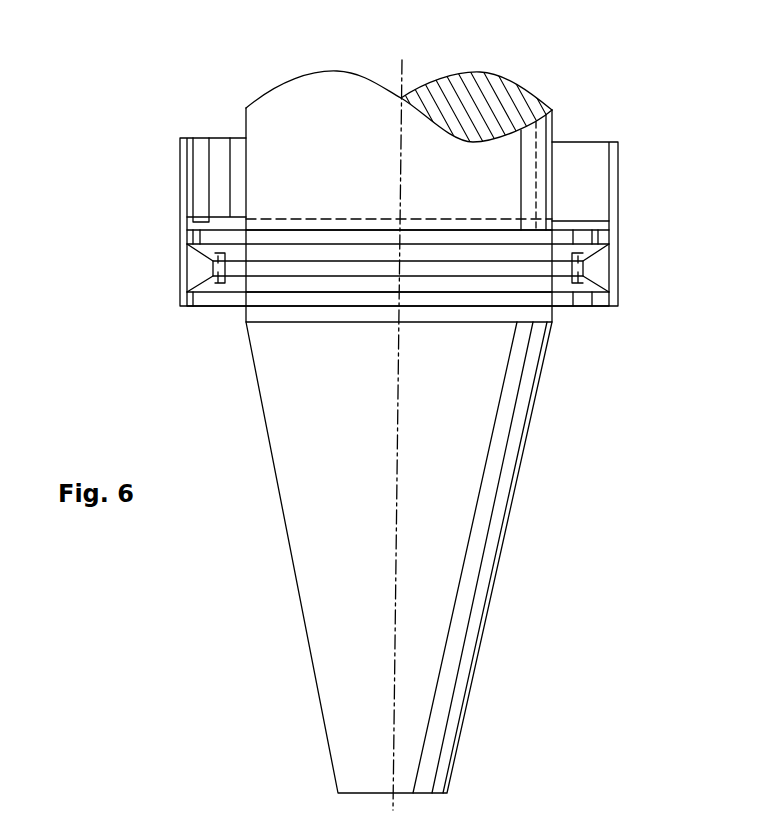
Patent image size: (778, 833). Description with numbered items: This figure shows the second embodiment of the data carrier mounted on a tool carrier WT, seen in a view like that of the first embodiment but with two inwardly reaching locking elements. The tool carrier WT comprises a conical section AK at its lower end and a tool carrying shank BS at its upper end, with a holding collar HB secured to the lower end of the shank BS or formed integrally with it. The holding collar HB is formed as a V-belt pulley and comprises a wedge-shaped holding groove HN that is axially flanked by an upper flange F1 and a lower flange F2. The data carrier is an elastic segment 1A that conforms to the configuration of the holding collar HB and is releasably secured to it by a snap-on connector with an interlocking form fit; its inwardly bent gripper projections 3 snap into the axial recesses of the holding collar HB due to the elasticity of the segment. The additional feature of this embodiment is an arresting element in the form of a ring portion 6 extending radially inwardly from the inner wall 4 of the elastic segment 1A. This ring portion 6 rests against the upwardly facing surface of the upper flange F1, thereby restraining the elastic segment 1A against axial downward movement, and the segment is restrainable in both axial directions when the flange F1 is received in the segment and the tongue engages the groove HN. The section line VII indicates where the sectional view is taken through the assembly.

The elastic segment 1A is at (627, 241).
The gripper projections 3 is at (200, 265).
The inner wall 4 is at (584, 207).
The ring portion 6 is at (193, 212).
The tool carrying shank BS is at (290, 115).
The holding groove HN is at (322, 267).
The upper flange F1 is at (486, 237).
The lower flange F2 is at (452, 300).
The holding collar HB is at (200, 306).
The tool carrier WT is at (275, 507).
The conical section AK is at (482, 640).
The section line VII- VII is at (272, 126).